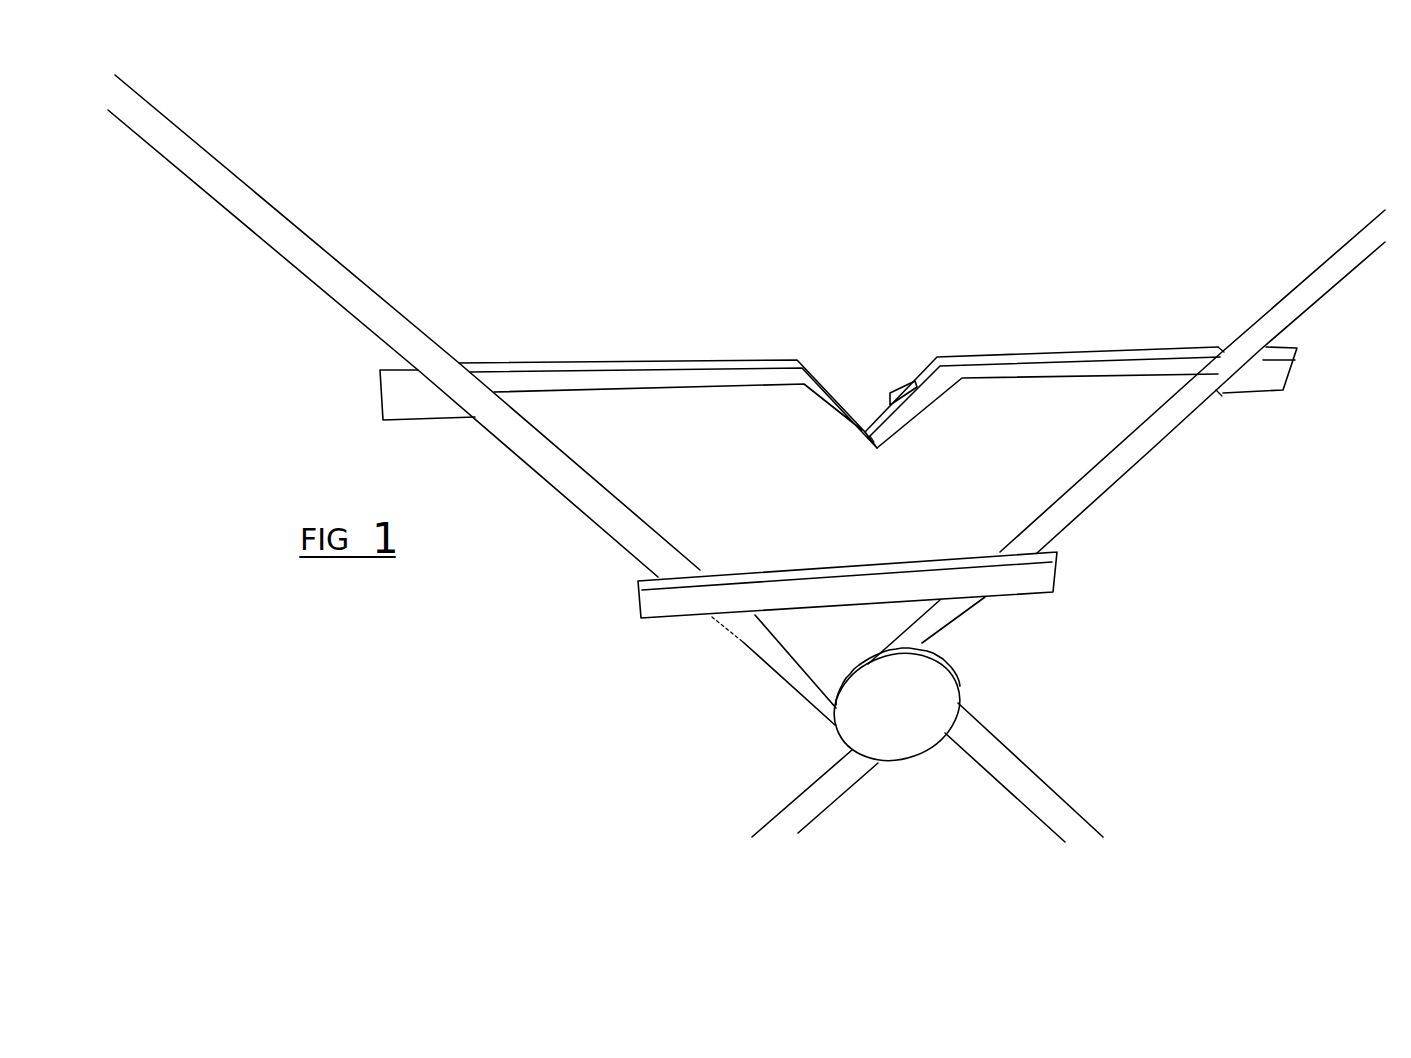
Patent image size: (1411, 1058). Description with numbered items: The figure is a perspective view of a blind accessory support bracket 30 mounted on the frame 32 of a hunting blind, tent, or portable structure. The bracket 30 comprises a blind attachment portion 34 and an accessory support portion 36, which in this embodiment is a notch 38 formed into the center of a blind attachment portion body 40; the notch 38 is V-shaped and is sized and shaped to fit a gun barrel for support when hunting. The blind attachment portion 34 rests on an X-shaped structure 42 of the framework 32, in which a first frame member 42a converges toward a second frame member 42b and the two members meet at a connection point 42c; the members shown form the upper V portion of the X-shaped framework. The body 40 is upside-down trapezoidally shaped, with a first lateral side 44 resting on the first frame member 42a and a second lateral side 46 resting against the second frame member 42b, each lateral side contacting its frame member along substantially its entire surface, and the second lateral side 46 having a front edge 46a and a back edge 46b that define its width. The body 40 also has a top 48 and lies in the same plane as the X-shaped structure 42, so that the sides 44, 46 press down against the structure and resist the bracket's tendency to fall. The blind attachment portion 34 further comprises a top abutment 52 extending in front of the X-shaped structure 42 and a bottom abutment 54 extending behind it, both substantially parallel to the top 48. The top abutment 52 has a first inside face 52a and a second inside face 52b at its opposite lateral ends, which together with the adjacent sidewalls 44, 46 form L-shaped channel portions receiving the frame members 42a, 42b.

The blind accessory support bracket 30 is at (1002, 330).
The frame 32 is at (810, 750).
The blind attachment portion 34 is at (602, 252).
The accessory support portion 36 is at (868, 333).
The notch 38 is at (913, 403).
The blind attachment portion body 40 is at (1090, 393).
The X-shaped structure 42 is at (910, 638).
The first frame member 42a is at (627, 532).
The second frame member 42b is at (1072, 507).
The connection point 42c is at (937, 700).
The first lateral side 44 is at (610, 493).
The second lateral side 46 is at (1095, 474).
The front edge 46a is at (1220, 352).
The back edge 46b is at (1221, 390).
The top 48 is at (565, 380).
The top abutment 52 is at (358, 392).
The first inside face 52a is at (417, 405).
The second inside face 52b is at (1263, 377).
The bottom abutment 54 is at (1028, 590).